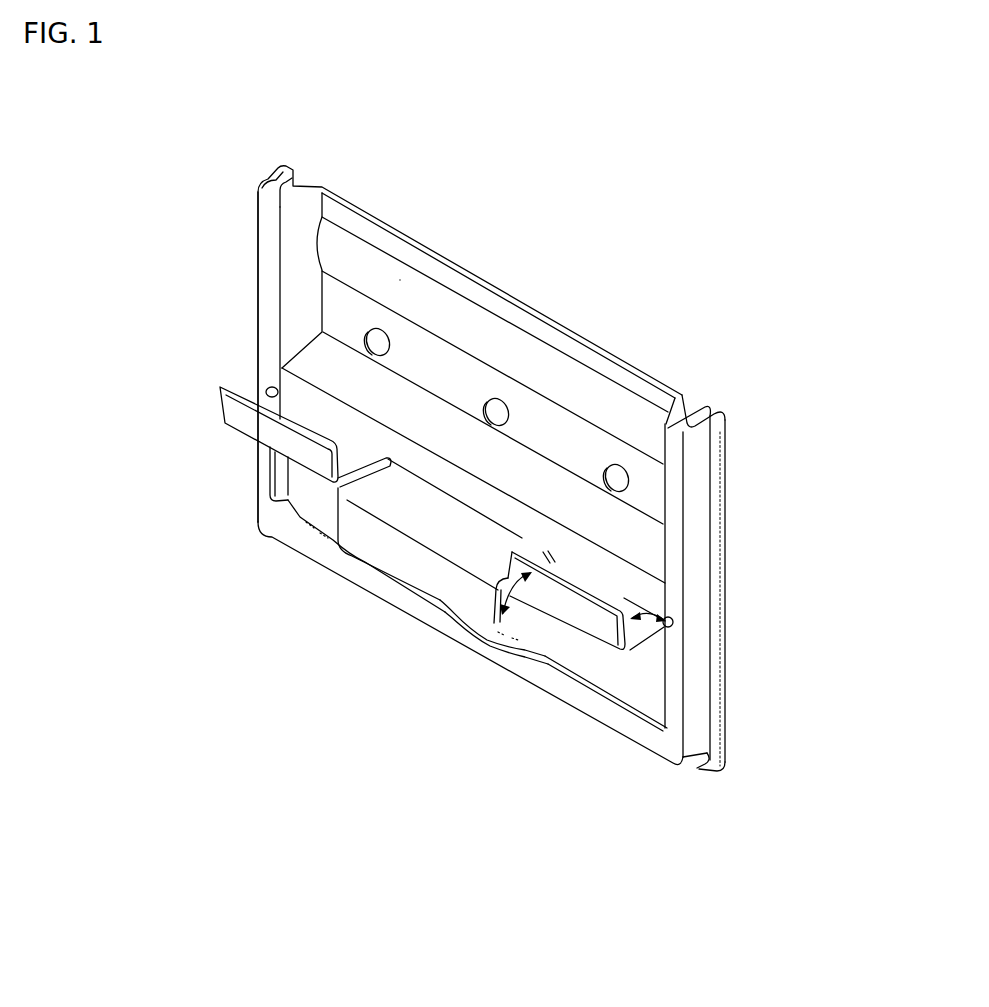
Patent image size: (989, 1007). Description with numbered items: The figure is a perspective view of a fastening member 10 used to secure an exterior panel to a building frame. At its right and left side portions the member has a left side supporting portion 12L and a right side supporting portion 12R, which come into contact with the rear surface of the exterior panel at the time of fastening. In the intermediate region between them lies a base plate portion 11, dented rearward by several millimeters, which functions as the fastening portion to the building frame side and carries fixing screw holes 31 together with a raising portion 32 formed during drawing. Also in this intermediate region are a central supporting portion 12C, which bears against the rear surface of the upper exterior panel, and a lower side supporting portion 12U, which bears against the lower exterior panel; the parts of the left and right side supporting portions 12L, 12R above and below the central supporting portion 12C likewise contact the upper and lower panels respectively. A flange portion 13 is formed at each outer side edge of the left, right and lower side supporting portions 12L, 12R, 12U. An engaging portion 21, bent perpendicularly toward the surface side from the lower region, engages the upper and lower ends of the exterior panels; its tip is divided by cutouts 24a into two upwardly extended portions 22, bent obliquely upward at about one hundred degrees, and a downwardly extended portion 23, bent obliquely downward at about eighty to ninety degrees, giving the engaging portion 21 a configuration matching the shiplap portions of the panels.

The fastening member 10 is at (739, 266).
The base plate portion 11 is at (558, 345).
The left side supporting portion 12L is at (258, 290).
The right side supporting portion 12R is at (677, 687).
The lower side supporting portion 12U is at (592, 705).
The central supporting portion 12C is at (620, 578).
The flange portion 13 is at (273, 170).
The engaging portion 21 is at (327, 500).
The upwardly extended portion 22 is at (252, 423).
The downwardly extended portion 23 is at (392, 540).
The cutout 24a is at (367, 460).
The fixing screw hole 31 is at (612, 470).
The raising portion 32 is at (467, 326).